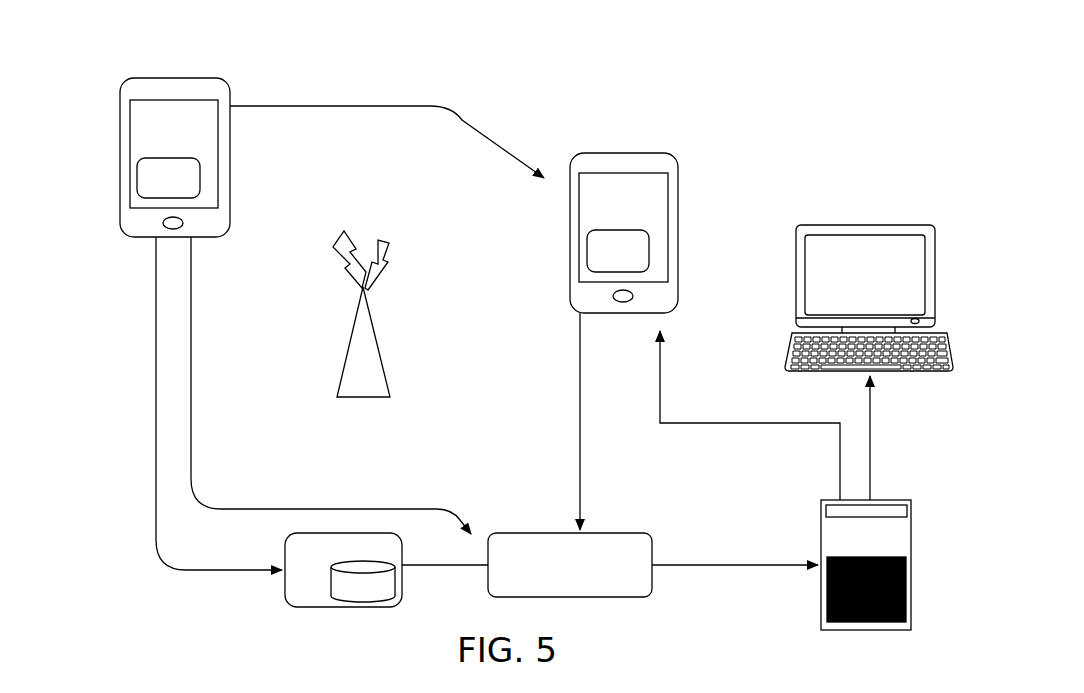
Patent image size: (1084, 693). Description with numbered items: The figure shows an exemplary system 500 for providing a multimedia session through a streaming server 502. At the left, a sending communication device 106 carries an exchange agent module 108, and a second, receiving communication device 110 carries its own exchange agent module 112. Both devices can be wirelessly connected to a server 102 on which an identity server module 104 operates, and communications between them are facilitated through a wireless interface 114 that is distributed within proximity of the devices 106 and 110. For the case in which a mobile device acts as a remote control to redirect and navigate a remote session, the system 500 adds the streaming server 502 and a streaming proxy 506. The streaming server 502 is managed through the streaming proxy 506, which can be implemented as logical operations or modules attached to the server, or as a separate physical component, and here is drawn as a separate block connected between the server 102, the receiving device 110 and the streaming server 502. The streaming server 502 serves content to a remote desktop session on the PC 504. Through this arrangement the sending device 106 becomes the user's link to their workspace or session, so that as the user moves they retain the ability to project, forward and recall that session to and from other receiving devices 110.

The system 500 is at (846, 74).
The communication device 106 is at (120, 126).
The exchange agent module 108 is at (137, 182).
The communication device 110 is at (570, 200).
The exchange agent module 112 is at (587, 256).
The wireless interface 114 is at (382, 346).
The PC 504 is at (796, 275).
The streaming server 502 is at (821, 598).
The streaming proxy 506 is at (613, 533).
The server 102 is at (285, 546).
The identity server module 104 is at (396, 587).